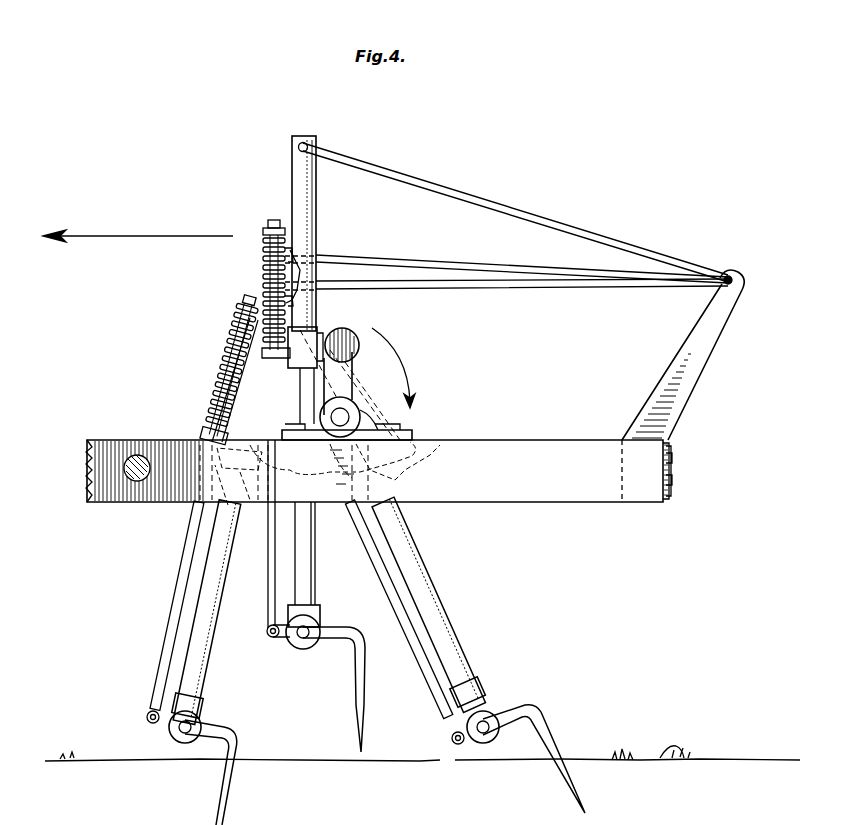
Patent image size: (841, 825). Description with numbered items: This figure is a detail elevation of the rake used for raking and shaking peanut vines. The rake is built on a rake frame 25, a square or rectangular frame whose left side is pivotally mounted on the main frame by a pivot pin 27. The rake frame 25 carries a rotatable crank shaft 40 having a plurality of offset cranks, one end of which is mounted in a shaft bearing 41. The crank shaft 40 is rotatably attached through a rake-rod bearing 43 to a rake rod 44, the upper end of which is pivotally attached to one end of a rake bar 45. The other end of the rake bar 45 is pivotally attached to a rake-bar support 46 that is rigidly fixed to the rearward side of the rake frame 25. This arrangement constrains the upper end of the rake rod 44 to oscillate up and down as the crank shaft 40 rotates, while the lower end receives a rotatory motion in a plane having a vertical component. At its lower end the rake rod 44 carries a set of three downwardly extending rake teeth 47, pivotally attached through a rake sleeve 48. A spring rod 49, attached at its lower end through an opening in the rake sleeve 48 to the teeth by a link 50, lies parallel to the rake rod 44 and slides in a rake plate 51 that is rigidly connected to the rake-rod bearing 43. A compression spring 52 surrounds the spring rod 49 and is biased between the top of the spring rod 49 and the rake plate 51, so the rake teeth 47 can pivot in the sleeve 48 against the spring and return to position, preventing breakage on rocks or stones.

The rake frame 25 is at (517, 436).
The pivot pin 27 is at (131, 447).
The crank shaft 40 is at (351, 385).
The shaft bearing 41 is at (362, 414).
The rake-rod bearing 43 is at (342, 328).
The rake rod 44 is at (314, 222).
The rake bar 45 is at (503, 206).
The rake-bar support 46 is at (684, 411).
The rake teeth 47 is at (366, 662).
The rake sleeve 48 is at (323, 614).
The spring rod 49 is at (267, 590).
The link 50 is at (276, 640).
The rake plate 51 is at (248, 322).
The compression spring 52 is at (258, 265).